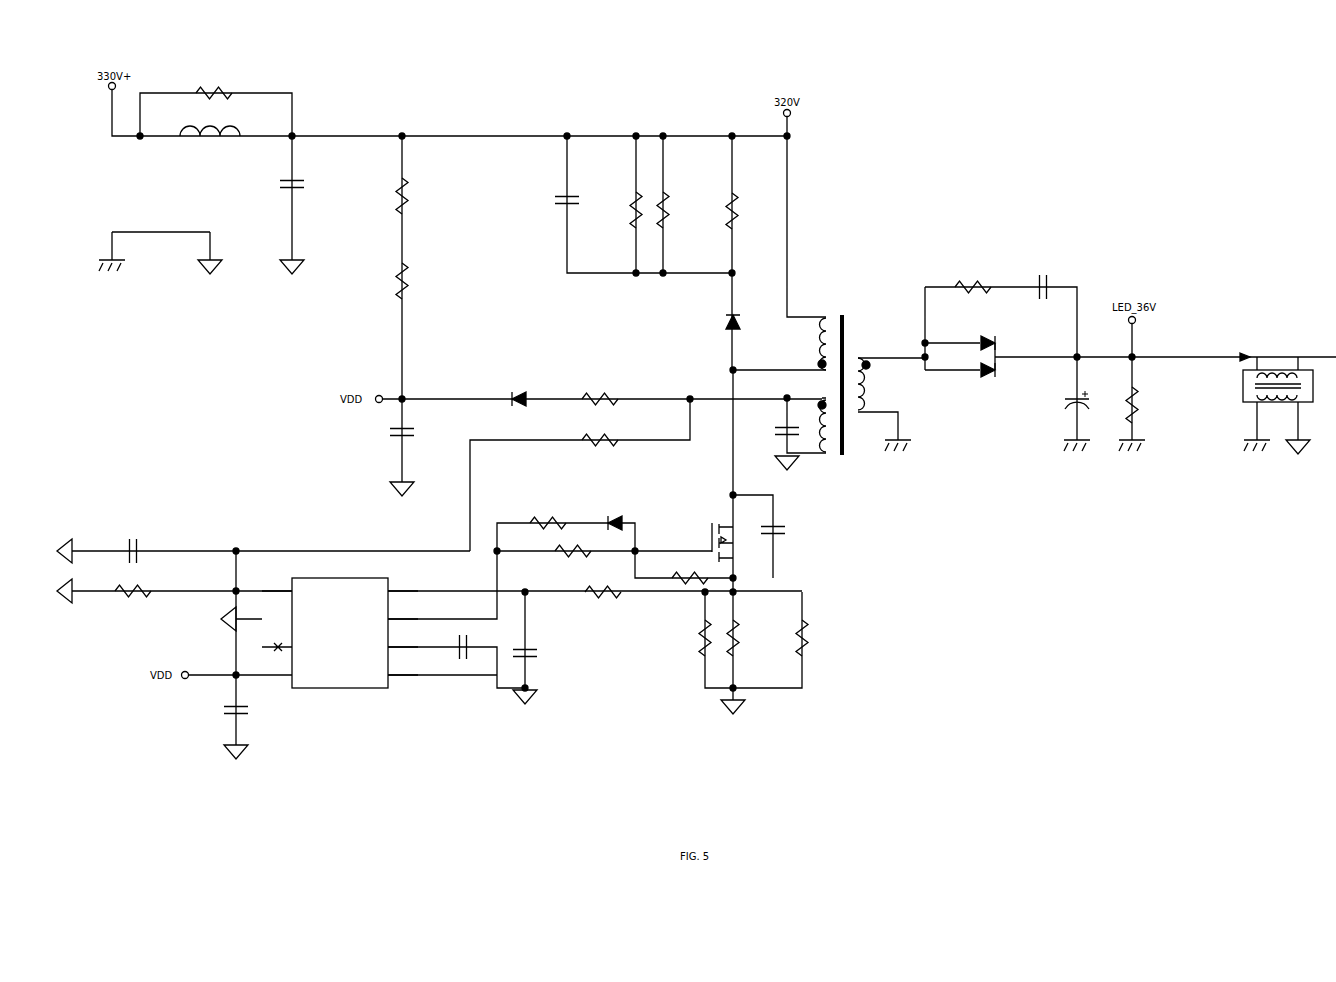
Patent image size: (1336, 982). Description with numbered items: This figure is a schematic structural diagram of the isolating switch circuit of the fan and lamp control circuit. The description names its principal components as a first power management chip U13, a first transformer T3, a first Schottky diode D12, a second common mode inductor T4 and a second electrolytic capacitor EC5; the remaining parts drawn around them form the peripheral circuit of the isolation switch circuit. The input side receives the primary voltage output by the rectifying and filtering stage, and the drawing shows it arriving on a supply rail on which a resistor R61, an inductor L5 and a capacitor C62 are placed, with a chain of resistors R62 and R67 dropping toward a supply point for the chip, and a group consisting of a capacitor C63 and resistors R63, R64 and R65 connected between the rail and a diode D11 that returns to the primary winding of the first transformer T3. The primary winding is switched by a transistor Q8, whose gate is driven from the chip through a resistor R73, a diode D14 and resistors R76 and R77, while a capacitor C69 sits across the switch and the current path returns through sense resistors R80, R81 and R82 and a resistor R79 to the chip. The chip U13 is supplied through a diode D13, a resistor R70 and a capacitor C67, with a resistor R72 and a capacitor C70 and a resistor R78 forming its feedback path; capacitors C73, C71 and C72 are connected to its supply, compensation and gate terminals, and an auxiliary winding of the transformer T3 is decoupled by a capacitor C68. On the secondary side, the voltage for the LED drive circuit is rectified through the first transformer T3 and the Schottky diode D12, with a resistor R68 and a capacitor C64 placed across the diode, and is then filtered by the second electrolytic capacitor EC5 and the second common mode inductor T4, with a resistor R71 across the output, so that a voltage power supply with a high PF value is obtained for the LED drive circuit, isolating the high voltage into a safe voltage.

The resistor R61 is at (198, 86).
The inductor L5 is at (203, 129).
The capacitor C62 is at (270, 191).
The resistor R62 is at (414, 196).
The resistor R67 is at (414, 281).
The capacitor C63 is at (553, 200).
The resistor R63 is at (647, 210).
The resistor R64 is at (675, 210).
The resistor R65 is at (744, 211).
The diode D11 is at (743, 323).
The first transformer T3 is at (845, 387).
The capacitor C68 is at (774, 425).
The resistor R68 is at (957, 271).
The capacitor C64 is at (1026, 274).
The first Schottky diode D12 is at (967, 366).
The second electrolytic capacitor EC5 is at (1062, 400).
The resistor R71 is at (1145, 405).
The second common mode inductor T4 is at (1278, 372).
The diode D13 is at (512, 376).
The resistor R70 is at (599, 375).
The capacitor C67 is at (353, 435).
The resistor R72 is at (585, 437).
The capacitor C70 is at (110, 546).
The resistor R78 is at (117, 587).
The first power management chip U13 is at (366, 642).
The capacitor C73 is at (223, 702).
The capacitor C71 is at (447, 646).
The capacitor C72 is at (535, 651).
The resistor R79 is at (587, 598).
The resistor R73 is at (538, 506).
The diode D14 is at (614, 507).
The resistor R76 is at (611, 547).
The resistor R77 is at (680, 575).
The MOSFET Q8 is at (732, 539).
The capacitor C69 is at (784, 522).
The resistor R80 is at (679, 638).
The resistor R81 is at (745, 638).
The resistor R82 is at (814, 638).